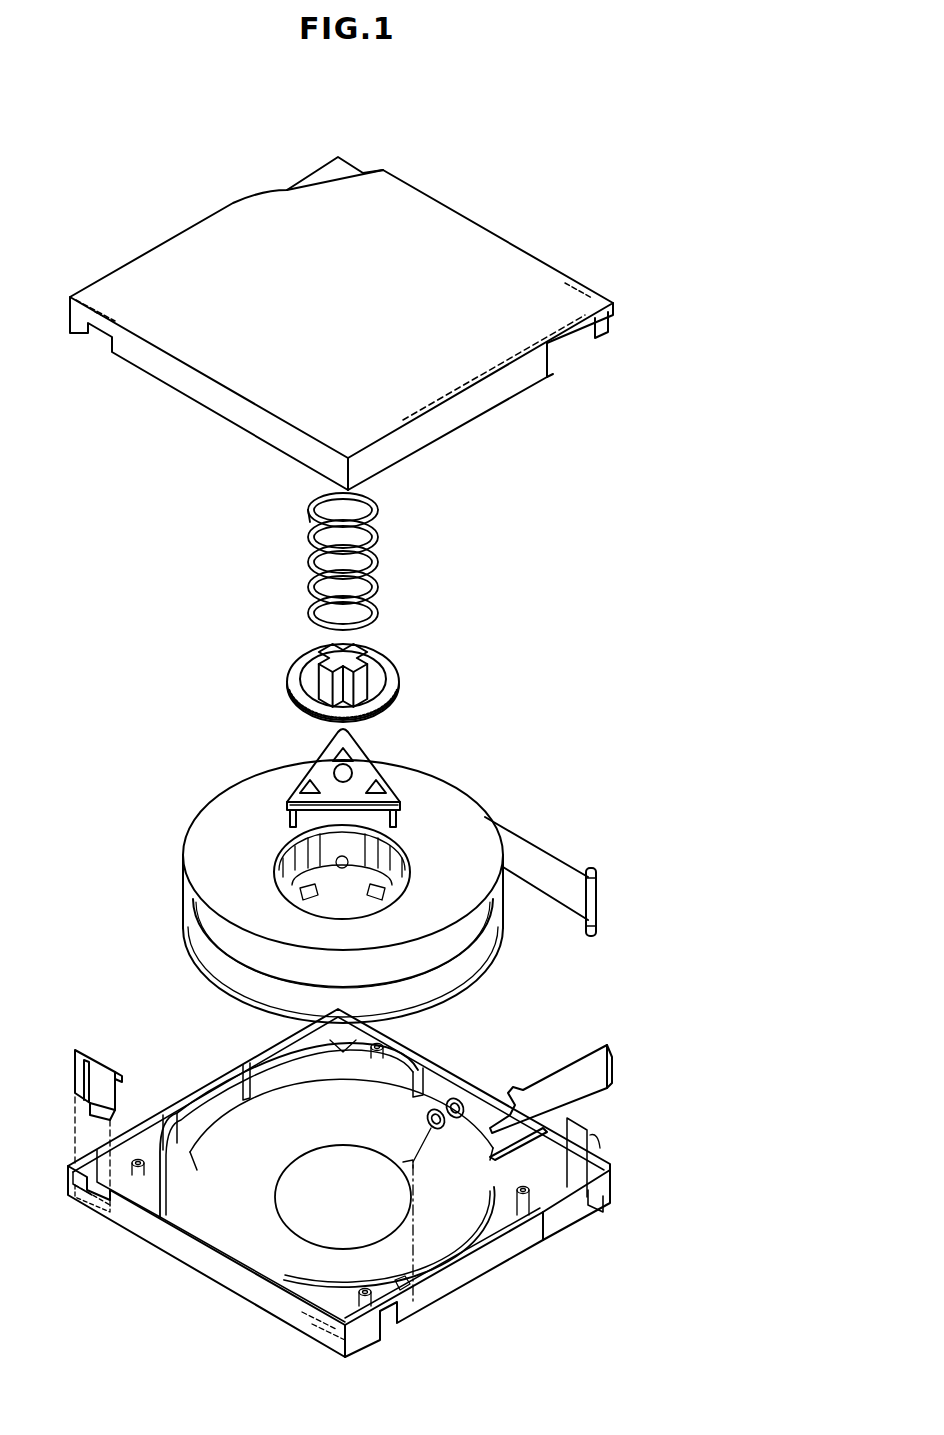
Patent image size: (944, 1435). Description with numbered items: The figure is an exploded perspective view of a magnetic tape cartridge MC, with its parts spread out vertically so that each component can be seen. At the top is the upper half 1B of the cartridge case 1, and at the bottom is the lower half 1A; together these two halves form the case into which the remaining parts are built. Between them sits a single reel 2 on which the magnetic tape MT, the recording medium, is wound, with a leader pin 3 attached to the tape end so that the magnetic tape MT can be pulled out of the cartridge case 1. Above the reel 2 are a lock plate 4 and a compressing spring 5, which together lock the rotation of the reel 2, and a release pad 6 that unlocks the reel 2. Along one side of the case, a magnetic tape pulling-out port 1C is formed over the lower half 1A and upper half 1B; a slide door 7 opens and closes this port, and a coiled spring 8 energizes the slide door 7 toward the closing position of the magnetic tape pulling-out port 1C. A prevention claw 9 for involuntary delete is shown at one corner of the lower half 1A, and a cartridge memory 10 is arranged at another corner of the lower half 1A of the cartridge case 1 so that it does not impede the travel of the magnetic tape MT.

The magnetic tape cartridge MC is at (540, 255).
The cartridge case 1 is at (90, 624).
The lower half 1A is at (197, 1088).
The upper half 1B is at (221, 421).
The magnetic tape pulling-out port 1C is at (550, 357).
The reel 2 is at (463, 792).
The leader pin 3 is at (596, 906).
The lock plate 4 is at (392, 653).
The compressing spring 5 is at (380, 565).
The release pad 6 is at (373, 747).
The slide door 7 is at (588, 1043).
The coiled spring 8 is at (457, 1103).
The prevention claw 9 is at (80, 1047).
The cartridge memory 10 is at (308, 1321).
The magnetic tape MT is at (552, 858).